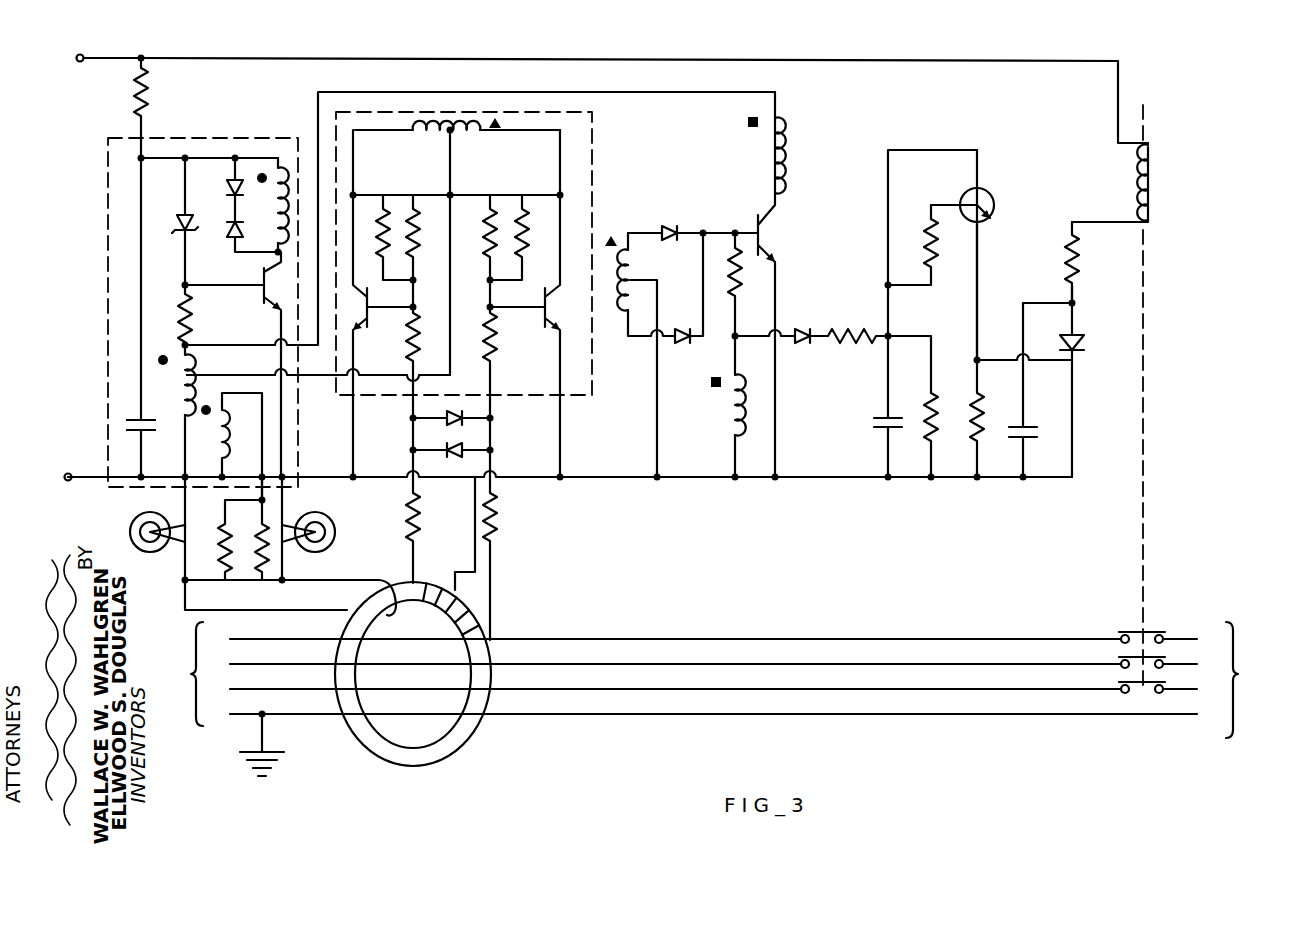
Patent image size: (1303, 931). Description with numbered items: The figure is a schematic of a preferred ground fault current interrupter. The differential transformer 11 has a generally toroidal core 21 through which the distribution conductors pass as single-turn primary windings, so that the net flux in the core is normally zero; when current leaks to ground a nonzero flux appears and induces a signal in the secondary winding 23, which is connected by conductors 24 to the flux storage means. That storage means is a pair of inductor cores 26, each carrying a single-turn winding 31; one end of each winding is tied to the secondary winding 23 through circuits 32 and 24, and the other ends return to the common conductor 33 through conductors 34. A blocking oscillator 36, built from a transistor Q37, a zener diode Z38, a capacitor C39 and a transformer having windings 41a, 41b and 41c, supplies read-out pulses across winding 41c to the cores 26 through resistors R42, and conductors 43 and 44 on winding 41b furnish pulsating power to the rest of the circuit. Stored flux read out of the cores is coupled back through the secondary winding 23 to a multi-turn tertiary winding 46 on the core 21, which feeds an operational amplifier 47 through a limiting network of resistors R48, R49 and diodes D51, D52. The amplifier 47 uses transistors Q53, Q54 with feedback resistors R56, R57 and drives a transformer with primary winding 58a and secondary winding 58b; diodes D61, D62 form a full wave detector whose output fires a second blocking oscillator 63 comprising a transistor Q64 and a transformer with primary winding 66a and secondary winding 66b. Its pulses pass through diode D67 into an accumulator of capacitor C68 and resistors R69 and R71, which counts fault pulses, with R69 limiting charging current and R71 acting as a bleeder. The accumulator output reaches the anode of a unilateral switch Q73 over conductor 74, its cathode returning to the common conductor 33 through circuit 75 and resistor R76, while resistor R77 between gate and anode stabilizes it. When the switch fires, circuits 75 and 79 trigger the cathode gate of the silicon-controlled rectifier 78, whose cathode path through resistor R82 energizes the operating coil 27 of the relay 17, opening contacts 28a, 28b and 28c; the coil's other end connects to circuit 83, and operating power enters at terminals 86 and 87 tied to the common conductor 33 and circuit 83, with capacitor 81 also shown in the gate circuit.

The terminal 87 is at (80, 54).
The circuit 83 is at (124, 56).
The current-interrupting means 17 is at (1165, 140).
The operating coil 27 is at (1160, 190).
The blocking oscillator 36 is at (218, 142).
The transformer winding 41a is at (258, 205).
The zener diode Z38 is at (200, 250).
The transistor Q37 is at (272, 305).
The conductor 43 is at (234, 346).
The transformer winding 41b is at (178, 360).
The conductor 44 is at (246, 374).
The transformer winding 41c is at (245, 446).
The capacitor C39 is at (158, 428).
The terminal 86 is at (66, 471).
The common conductor 33 is at (90, 480).
The conductors 34 is at (182, 490).
The inductor cores 26 is at (132, 522).
The single-turn winding 31 is at (147, 545).
The circuits 32 is at (286, 576).
The resistors R42 is at (252, 535).
The conductors 24 is at (286, 611).
The toroidal core 21 is at (480, 632).
The secondary winding 23 is at (439, 610).
The tertiary winding 46 is at (428, 583).
The resistor R48 is at (420, 520).
The resistor R49 is at (498, 528).
The differential transformer 11 is at (352, 757).
The contact 28a is at (1153, 632).
The contact 28b is at (1128, 670).
The contact 28c is at (1128, 695).
The operational amplifier 47 is at (420, 118).
The primary winding 58a is at (457, 149).
The feedback resistor R56 is at (388, 218).
The feedback resistor R57 is at (515, 220).
The transistor Q53 is at (356, 318).
The transistor Q54 is at (556, 318).
The diode D52 is at (482, 424).
The diode D51 is at (482, 456).
The secondary winding 58b is at (640, 355).
The diode D61 is at (672, 224).
The diode D62 is at (684, 347).
The primary winding 66a is at (788, 160).
The second blocking oscillator 63 is at (800, 181).
The transistor Q64 is at (768, 230).
The secondary winding 66b is at (725, 408).
The diode D67 is at (806, 326).
The resistor R69 is at (848, 348).
The conductor 74 is at (886, 212).
The unilateral switch Q73 is at (995, 198).
The circuit 75 is at (980, 262).
The resistor R77 is at (938, 262).
The resistor R71 is at (924, 410).
The capacitor C68 is at (880, 422).
The resistor R76 is at (982, 410).
The circuit 79 is at (1004, 358).
The capacitor 81 is at (1074, 414).
The silicon-controlled rectifier 78 is at (1097, 350).
The resistor R82 is at (1080, 272).